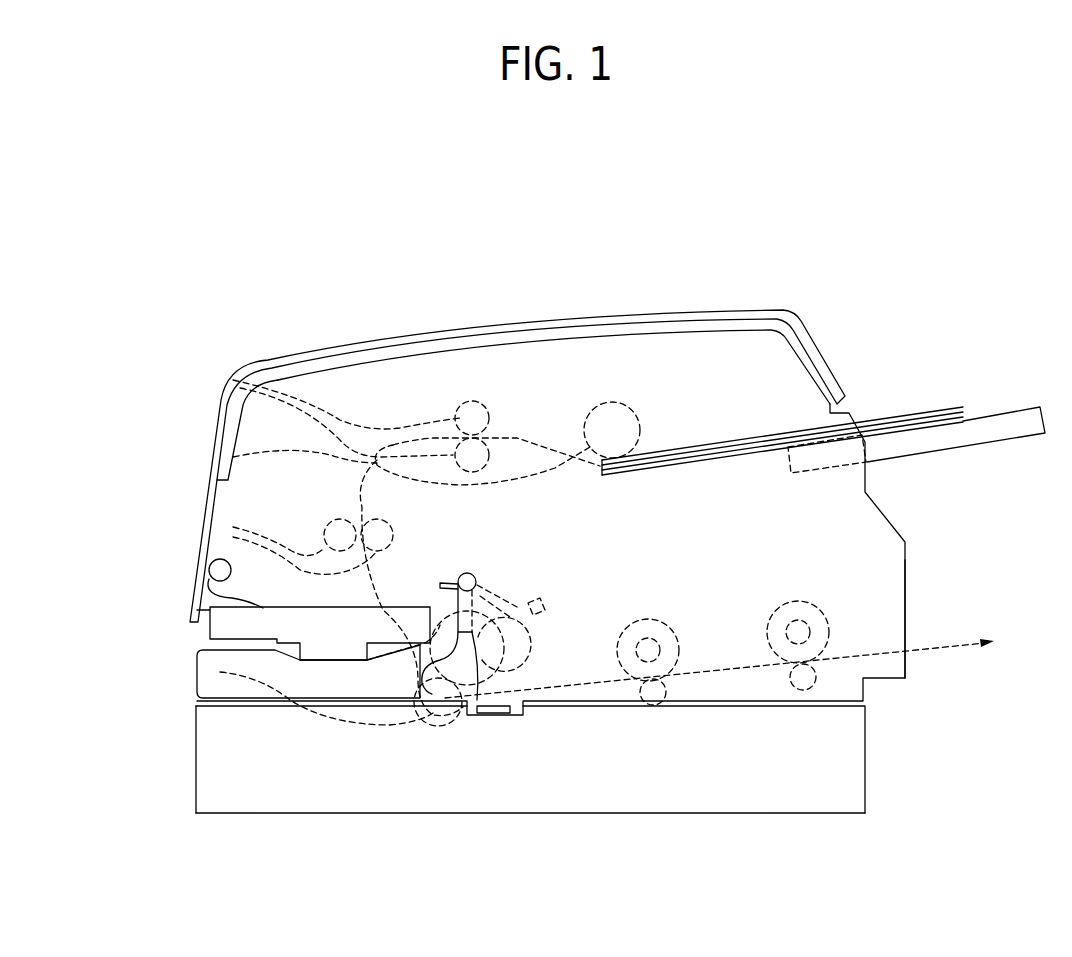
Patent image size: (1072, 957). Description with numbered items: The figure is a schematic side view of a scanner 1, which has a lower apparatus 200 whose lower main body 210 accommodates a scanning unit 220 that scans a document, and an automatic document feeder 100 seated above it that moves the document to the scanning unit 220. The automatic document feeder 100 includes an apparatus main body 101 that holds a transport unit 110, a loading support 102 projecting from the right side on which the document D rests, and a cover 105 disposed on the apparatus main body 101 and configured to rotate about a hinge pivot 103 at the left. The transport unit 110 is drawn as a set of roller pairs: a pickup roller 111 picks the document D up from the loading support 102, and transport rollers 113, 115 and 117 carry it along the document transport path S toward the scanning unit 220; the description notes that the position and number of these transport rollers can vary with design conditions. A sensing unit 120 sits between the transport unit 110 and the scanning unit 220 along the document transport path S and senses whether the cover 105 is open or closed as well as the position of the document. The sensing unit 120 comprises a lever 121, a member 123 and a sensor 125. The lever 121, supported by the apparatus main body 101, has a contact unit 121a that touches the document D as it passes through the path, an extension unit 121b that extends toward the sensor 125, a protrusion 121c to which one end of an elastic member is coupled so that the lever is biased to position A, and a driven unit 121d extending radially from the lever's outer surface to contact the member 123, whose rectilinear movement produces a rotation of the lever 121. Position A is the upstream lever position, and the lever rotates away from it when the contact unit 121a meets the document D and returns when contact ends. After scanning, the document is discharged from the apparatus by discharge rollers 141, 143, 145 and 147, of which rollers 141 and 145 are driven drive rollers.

The scanner 1 is at (824, 207).
The automatic document feeder 100 is at (828, 338).
The apparatus main body 101 is at (888, 533).
The loading support 102 is at (1018, 405).
The hinge pivot 103 is at (231, 570).
The cover 105 is at (641, 326).
The transport unit 110 is at (92, 403).
The pickup roller 111 is at (233, 457).
The transport roller 113 is at (240, 388).
The transport roller 115 is at (233, 527).
The transport roller 117 is at (220, 672).
The sensing unit 120 is at (481, 565).
The lever 121 is at (523, 612).
The contact unit 121a is at (427, 720).
The extension unit 121b is at (497, 597).
The protrusion 121c is at (452, 587).
The driven unit 121d is at (477, 700).
The member 123 is at (325, 641).
The sensor 125 is at (537, 598).
The discharge roller 141 is at (672, 662).
The discharge roller 143 is at (653, 695).
The discharge roller 145 is at (827, 647).
The discharge roller 147 is at (810, 687).
The lower apparatus 200 is at (880, 757).
The lower main body 210 is at (573, 813).
The scanning unit 220 is at (510, 715).
The position A is at (413, 717).
The document D is at (922, 404).
The document transport path S is at (952, 640).